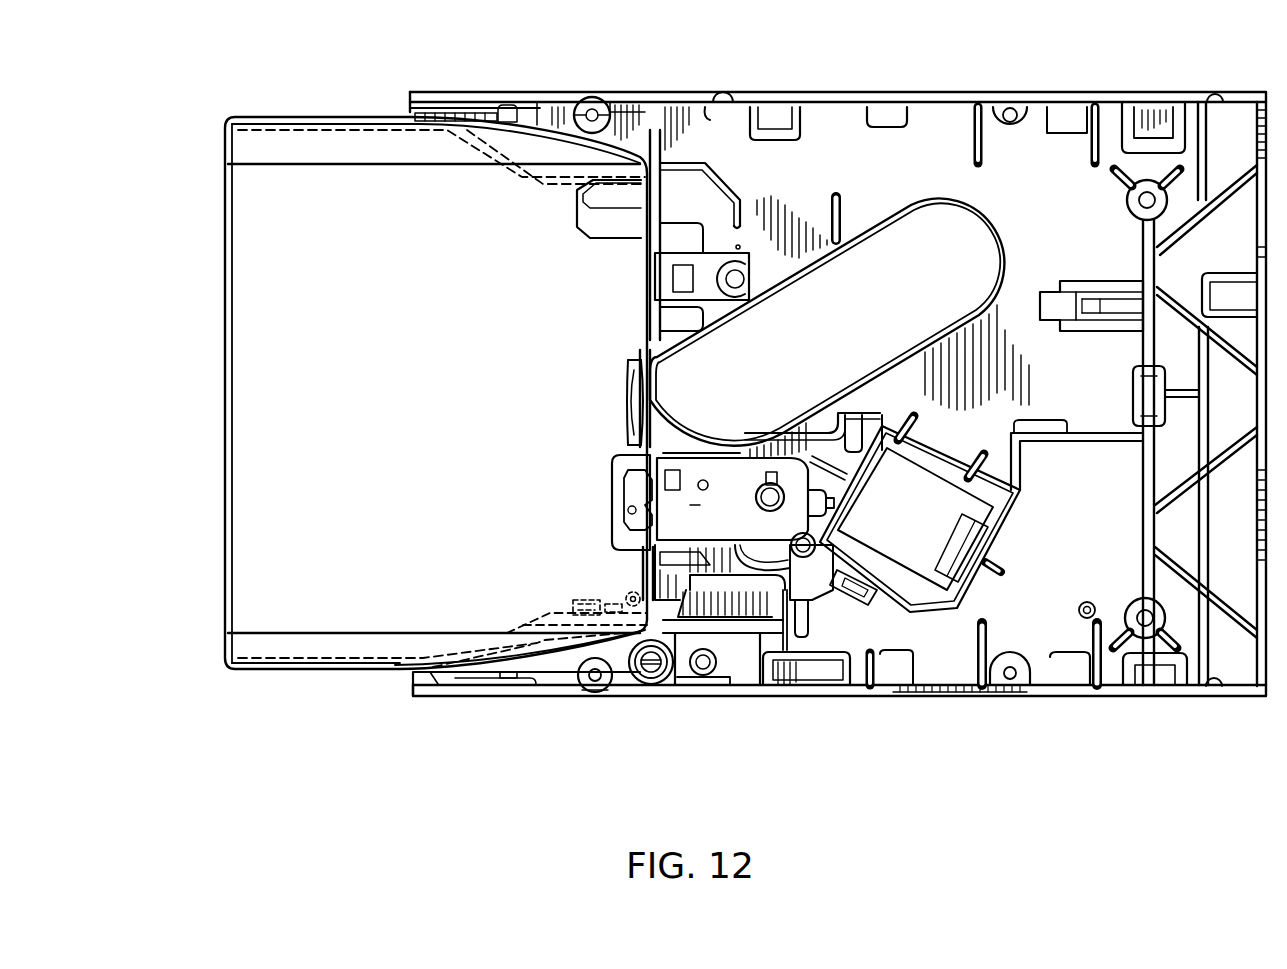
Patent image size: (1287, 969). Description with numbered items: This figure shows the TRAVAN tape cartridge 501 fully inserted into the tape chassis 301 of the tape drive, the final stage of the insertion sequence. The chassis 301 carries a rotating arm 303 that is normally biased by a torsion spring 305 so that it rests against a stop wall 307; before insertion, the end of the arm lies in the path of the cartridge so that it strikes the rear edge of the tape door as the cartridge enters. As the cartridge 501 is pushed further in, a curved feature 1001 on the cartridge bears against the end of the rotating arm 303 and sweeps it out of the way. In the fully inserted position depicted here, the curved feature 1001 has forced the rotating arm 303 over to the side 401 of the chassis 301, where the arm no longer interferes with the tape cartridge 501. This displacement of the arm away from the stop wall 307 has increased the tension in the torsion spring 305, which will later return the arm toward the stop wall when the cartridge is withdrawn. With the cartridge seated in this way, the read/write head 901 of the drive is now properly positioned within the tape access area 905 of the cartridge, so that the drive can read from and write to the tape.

The tape chassis 301 is at (883, 95).
The rotating arm 303 is at (533, 655).
The torsion spring 305 is at (657, 678).
The stop wall 307 is at (577, 608).
The side of the chassis 401 is at (502, 700).
The TRAVAN cartridge 501 is at (328, 588).
The read/write head 901 is at (643, 480).
The tape access area 905 is at (612, 494).
The curved feature 1001 is at (523, 625).